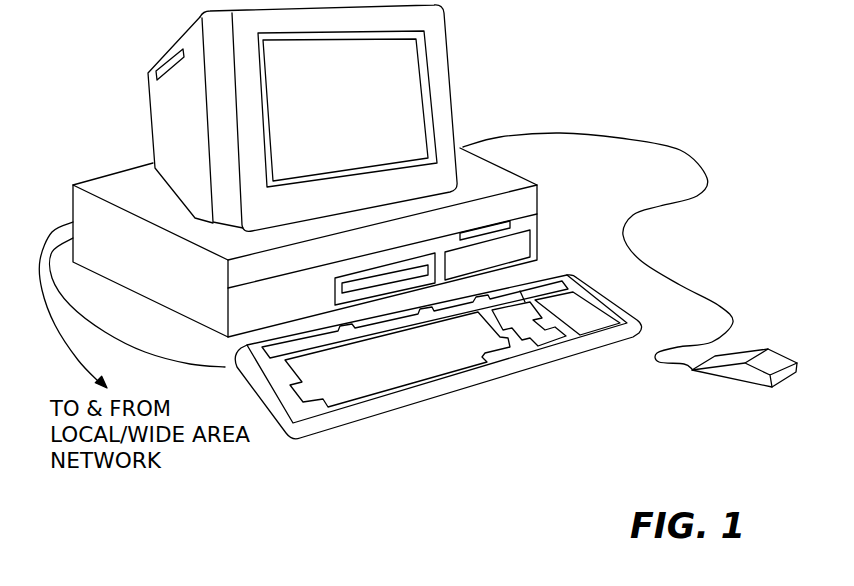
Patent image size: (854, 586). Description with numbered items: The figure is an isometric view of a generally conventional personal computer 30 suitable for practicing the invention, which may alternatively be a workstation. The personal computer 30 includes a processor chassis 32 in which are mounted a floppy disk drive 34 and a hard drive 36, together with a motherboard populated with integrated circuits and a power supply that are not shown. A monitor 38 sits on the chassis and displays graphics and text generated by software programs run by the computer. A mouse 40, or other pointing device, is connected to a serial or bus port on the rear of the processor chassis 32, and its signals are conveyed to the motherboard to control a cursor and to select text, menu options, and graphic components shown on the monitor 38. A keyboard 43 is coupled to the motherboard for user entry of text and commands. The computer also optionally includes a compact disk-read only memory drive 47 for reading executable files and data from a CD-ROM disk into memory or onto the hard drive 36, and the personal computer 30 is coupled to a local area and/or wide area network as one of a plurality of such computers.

The personal computer 30 is at (436, 245).
The processor chassis 32 is at (519, 219).
The floppy disk drive 34 is at (490, 220).
The hard drive 36 is at (508, 246).
The monitor 38 is at (447, 65).
The mouse 40 is at (772, 388).
The keyboard 43 is at (527, 370).
The compact disk-read only memory (CD-ROM) drive 47 is at (334, 292).